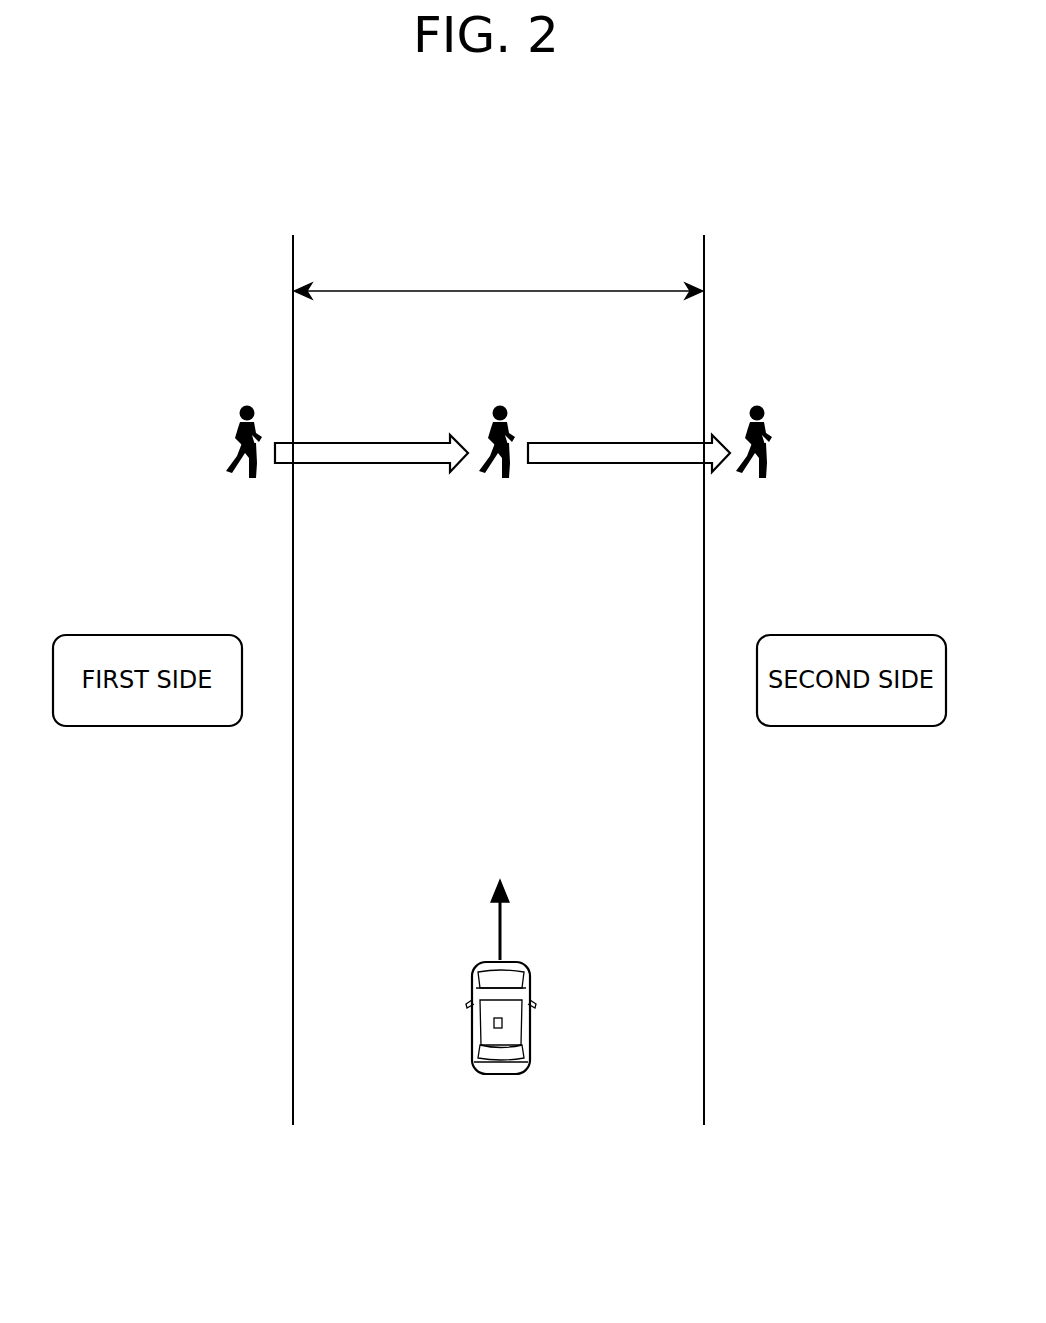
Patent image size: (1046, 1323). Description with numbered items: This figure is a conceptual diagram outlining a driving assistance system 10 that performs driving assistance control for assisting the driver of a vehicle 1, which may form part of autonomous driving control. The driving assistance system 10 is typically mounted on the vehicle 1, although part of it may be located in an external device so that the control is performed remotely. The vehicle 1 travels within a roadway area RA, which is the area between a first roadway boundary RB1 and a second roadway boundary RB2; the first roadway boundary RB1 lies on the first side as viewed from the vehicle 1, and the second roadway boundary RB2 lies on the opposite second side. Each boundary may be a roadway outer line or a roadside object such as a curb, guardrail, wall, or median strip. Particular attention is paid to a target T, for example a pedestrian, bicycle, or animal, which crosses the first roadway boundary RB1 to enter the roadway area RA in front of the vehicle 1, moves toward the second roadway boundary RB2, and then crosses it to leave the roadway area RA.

The vehicle 1 is at (500, 1075).
The driving assistance system 10 is at (442, 1022).
The target T is at (245, 480).
The first roadway boundary RB1 is at (291, 624).
The second roadway boundary RB2 is at (700, 624).
The roadway area RA is at (498, 276).